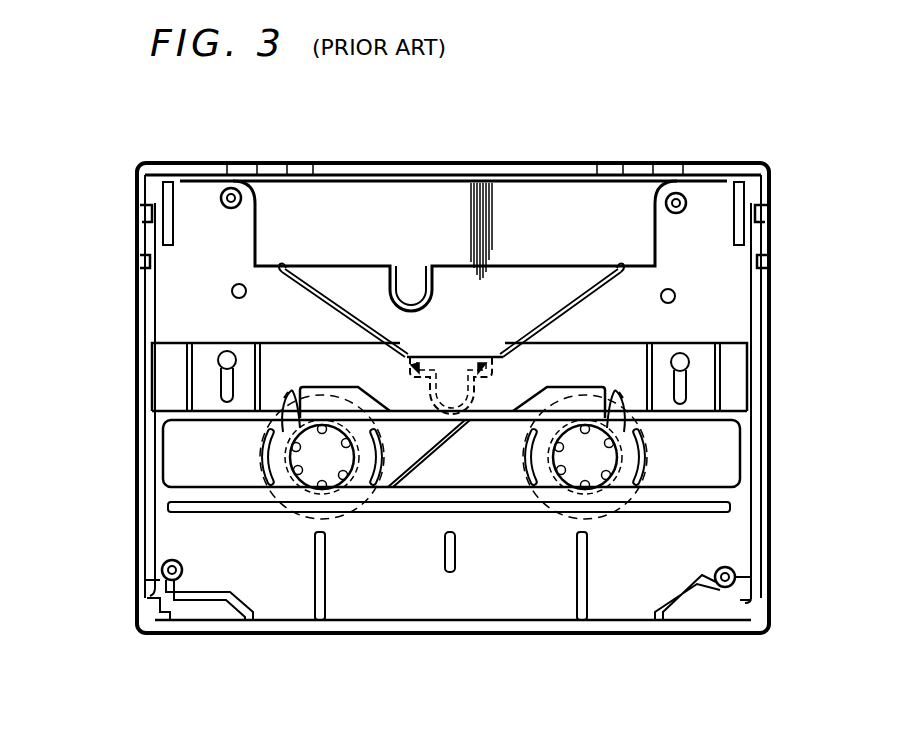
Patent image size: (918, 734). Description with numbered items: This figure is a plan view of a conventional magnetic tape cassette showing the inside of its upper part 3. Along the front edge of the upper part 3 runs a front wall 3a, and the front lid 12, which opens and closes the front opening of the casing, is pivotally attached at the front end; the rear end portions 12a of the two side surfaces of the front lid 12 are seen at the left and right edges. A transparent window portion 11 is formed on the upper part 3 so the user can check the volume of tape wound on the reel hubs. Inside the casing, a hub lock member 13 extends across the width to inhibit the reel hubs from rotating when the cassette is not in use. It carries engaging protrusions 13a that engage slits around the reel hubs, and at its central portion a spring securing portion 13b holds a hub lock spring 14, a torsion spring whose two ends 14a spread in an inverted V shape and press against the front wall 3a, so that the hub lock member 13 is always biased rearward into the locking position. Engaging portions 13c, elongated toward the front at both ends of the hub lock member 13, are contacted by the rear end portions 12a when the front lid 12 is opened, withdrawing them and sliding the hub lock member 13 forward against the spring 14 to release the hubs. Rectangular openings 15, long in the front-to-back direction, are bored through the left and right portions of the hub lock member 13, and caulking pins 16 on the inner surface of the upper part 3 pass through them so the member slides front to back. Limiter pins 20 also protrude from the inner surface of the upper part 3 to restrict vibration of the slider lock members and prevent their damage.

The upper part 3 is at (410, 635).
The front wall 3a is at (545, 266).
The transparent window portion 11 is at (492, 477).
The front lid 12 is at (457, 163).
The rear end portions 12a is at (140, 270).
The hub lock member 13 is at (455, 357).
The engaging protrusions 13a is at (283, 427).
The spring securing portion 13b is at (484, 368).
The engaging portions 13c is at (142, 212).
The hub lock spring 14 is at (334, 296).
The two ends 14a is at (283, 277).
The rectangular openings 15 is at (225, 393).
The caulking pins 16 is at (218, 360).
The limiter pins 20 is at (232, 291).